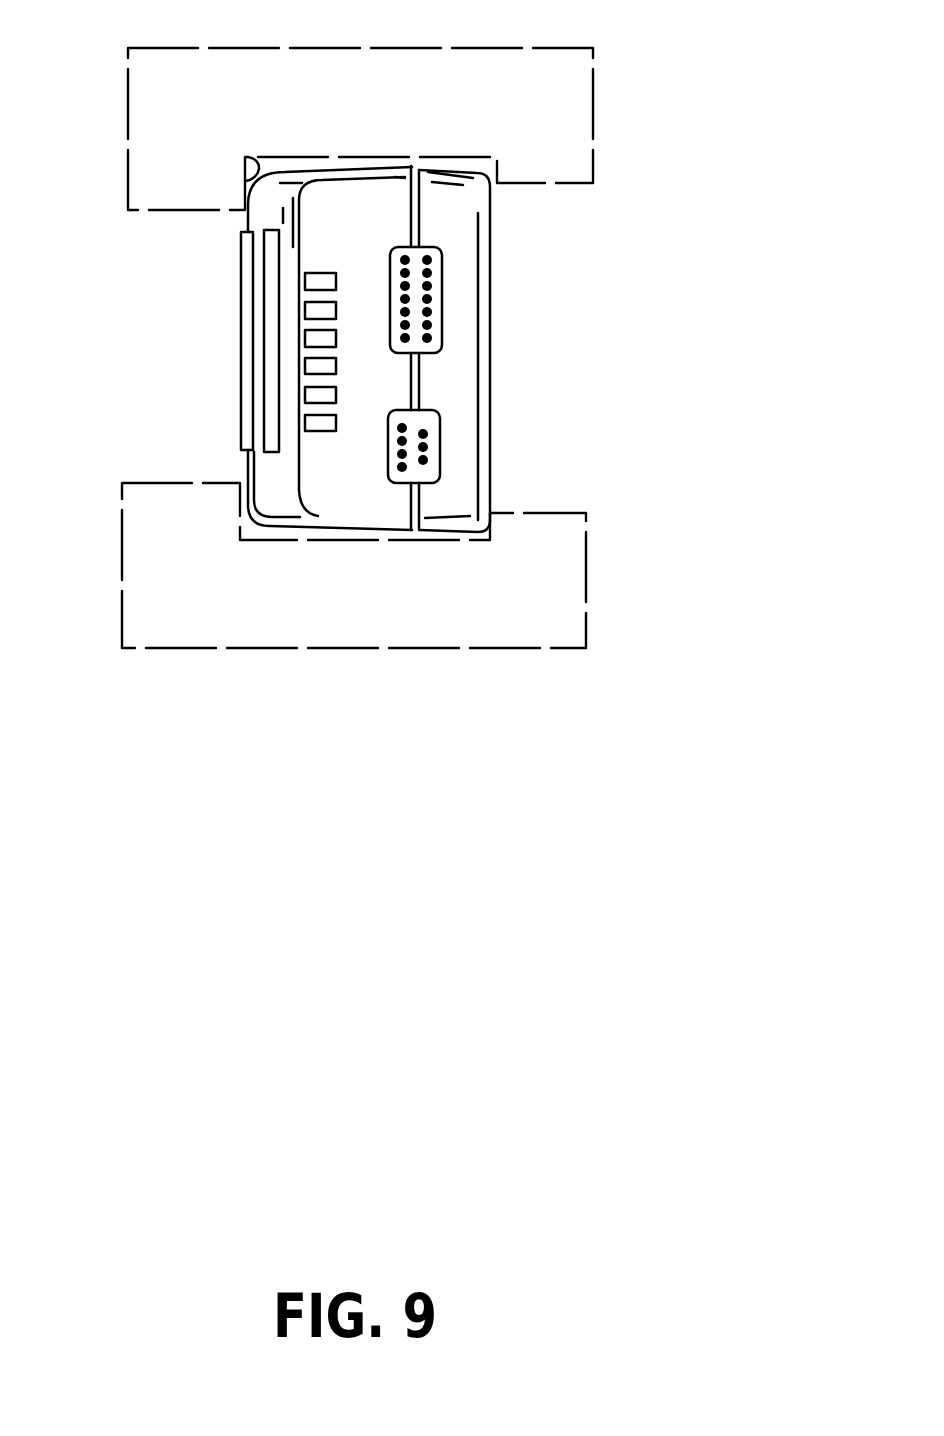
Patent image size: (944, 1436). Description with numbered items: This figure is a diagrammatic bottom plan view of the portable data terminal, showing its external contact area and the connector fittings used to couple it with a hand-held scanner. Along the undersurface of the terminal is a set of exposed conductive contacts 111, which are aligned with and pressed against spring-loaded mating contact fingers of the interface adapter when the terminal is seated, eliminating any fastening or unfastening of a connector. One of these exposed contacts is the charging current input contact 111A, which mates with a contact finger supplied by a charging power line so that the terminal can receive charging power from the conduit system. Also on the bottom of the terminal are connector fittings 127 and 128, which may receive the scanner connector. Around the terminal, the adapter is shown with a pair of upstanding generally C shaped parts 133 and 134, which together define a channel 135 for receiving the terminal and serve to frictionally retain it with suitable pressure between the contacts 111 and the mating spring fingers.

The conductive contacts 111 is at (330, 273).
The charging current input contact 111A is at (305, 432).
The connector fitting 127 is at (442, 323).
The connector fitting 128 is at (440, 450).
The upstanding generally C shaped part 133 is at (593, 77).
The upstanding generally C shaped part 134 is at (586, 615).
The channel 135 is at (246, 178).